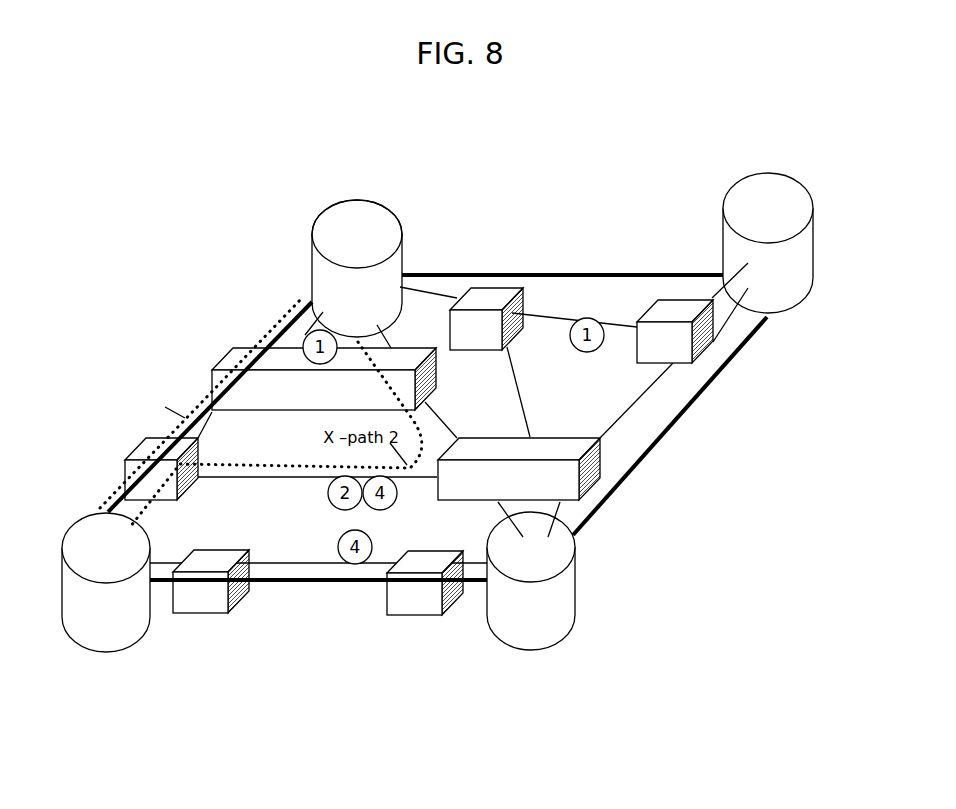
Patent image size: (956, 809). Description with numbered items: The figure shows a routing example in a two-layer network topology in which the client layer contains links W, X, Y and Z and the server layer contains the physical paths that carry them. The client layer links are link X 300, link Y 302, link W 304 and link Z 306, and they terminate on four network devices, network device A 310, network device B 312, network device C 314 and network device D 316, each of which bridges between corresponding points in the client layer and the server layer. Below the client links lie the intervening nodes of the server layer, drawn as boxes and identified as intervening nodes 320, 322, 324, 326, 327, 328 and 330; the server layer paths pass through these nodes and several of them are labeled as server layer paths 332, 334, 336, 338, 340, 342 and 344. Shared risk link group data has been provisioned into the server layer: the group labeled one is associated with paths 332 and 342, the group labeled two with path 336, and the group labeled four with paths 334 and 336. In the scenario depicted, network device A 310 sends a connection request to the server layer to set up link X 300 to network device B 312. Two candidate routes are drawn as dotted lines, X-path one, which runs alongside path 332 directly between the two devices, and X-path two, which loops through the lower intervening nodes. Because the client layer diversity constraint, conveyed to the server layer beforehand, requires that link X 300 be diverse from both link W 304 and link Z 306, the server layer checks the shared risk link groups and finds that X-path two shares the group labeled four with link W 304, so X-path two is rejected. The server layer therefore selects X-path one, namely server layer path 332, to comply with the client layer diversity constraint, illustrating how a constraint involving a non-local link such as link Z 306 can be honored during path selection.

The link X 300 is at (268, 337).
The link Y 302 is at (587, 272).
The link W 304 is at (352, 585).
The link Z 306 is at (718, 378).
The network device A 310 is at (88, 648).
The network device B 312 is at (333, 205).
The network device C 314 is at (805, 190).
The network device D 316 is at (557, 647).
The intervening node 320 is at (270, 405).
The intervening node 322 is at (200, 457).
The intervening node 324 is at (212, 553).
The intervening node 326 is at (435, 553).
The intervening node 327 is at (557, 437).
The intervening node 328 is at (480, 350).
The intervening node 330 is at (637, 342).
The server layer path 332 is at (296, 326).
The server layer path 334 is at (297, 563).
The server layer path 336 is at (273, 482).
The server layer path 338 is at (443, 420).
The server layer path 340 is at (515, 375).
The server layer path 342 is at (562, 318).
The server layer path 344 is at (620, 416).